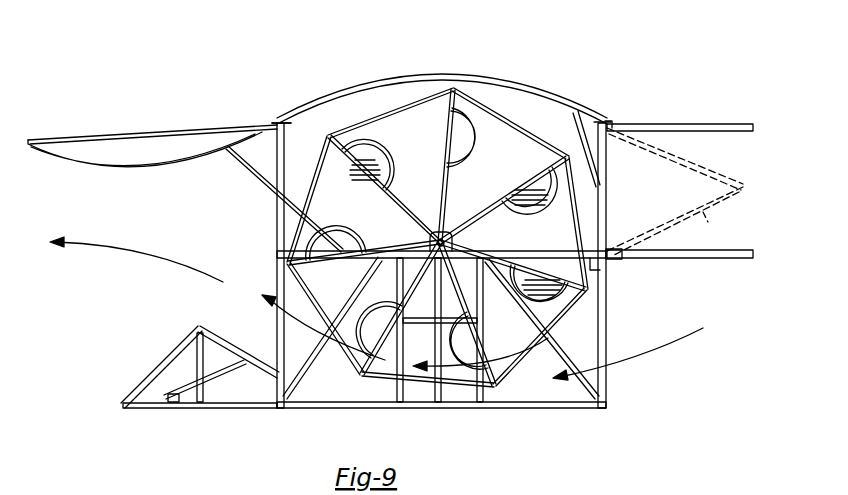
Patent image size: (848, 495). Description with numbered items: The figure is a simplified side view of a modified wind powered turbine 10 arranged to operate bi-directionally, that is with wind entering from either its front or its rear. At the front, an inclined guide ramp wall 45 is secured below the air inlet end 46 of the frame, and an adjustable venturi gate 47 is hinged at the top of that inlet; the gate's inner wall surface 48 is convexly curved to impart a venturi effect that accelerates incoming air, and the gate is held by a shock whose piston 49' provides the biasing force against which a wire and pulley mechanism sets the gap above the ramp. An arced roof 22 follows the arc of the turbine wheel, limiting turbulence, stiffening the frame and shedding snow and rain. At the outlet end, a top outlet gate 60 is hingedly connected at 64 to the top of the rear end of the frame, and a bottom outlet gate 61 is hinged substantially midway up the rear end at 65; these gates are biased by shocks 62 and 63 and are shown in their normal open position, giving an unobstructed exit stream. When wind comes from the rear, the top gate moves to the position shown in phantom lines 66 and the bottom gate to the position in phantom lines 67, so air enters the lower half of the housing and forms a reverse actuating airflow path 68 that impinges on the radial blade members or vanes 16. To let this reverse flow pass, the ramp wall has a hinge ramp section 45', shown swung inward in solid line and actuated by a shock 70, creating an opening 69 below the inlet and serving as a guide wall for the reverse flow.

The wind powered turbine 10 is at (500, 68).
The arced roof 22 is at (541, 89).
The shock 62 is at (583, 122).
The hinge connection of top outlet gate 64 is at (613, 123).
The top outlet gate 60 is at (715, 125).
The phantom lines of top outlet gate 66 is at (703, 165).
The bottom outlet gate 61 is at (735, 250).
The phantom lines of bottom outlet gate 67 is at (705, 217).
The hinge connection of bottom outlet gate 65 is at (618, 256).
The shock 63 is at (590, 266).
The reverse actuating airflow path 68 is at (127, 248).
The radial blade members or vanes 16 is at (361, 373).
The opening 69 is at (277, 335).
The shock 70 is at (180, 403).
The hinge ramp section 45' is at (210, 409).
The inclined guide ramp wall 45 is at (183, 363).
The adjustable venturi gate 47 is at (105, 133).
The inner wall surface 48 is at (117, 168).
The air inlet end 46 is at (272, 157).
The piston 49' is at (273, 199).